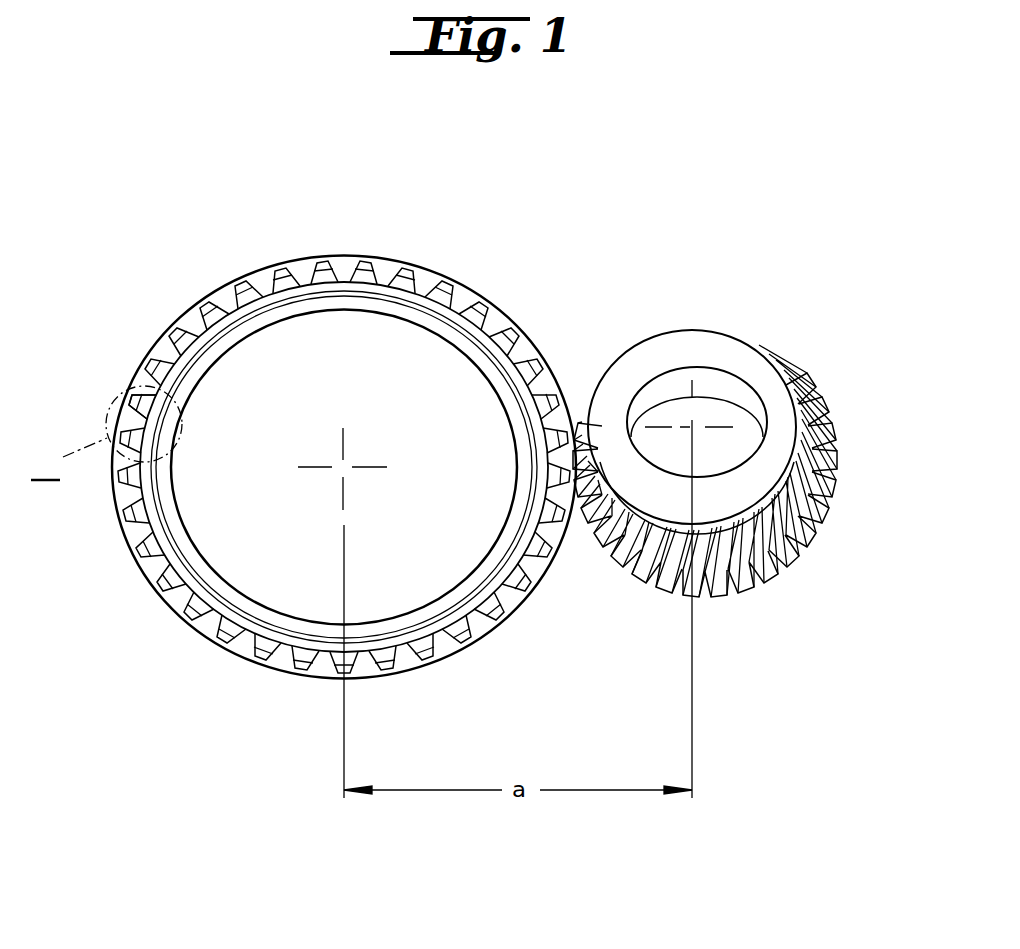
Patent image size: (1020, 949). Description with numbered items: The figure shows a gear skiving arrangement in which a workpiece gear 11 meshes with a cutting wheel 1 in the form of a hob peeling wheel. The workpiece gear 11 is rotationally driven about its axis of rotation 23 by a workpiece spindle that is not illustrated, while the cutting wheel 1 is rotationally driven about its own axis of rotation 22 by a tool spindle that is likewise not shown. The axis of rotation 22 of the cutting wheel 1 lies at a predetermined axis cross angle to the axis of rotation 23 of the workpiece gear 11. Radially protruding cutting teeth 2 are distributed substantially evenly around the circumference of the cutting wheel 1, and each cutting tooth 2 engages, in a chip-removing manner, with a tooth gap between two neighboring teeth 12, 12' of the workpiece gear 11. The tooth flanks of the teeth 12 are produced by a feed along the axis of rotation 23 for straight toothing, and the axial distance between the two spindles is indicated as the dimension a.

The cutting wheel 1 is at (735, 448).
The cutting teeth 2 is at (823, 437).
The axis of rotation 22 is at (692, 427).
The workpiece gear 11 is at (303, 401).
The teeth 12 is at (323, 459).
The tooth 12' is at (113, 420).
The axis of rotation 23 is at (343, 468).